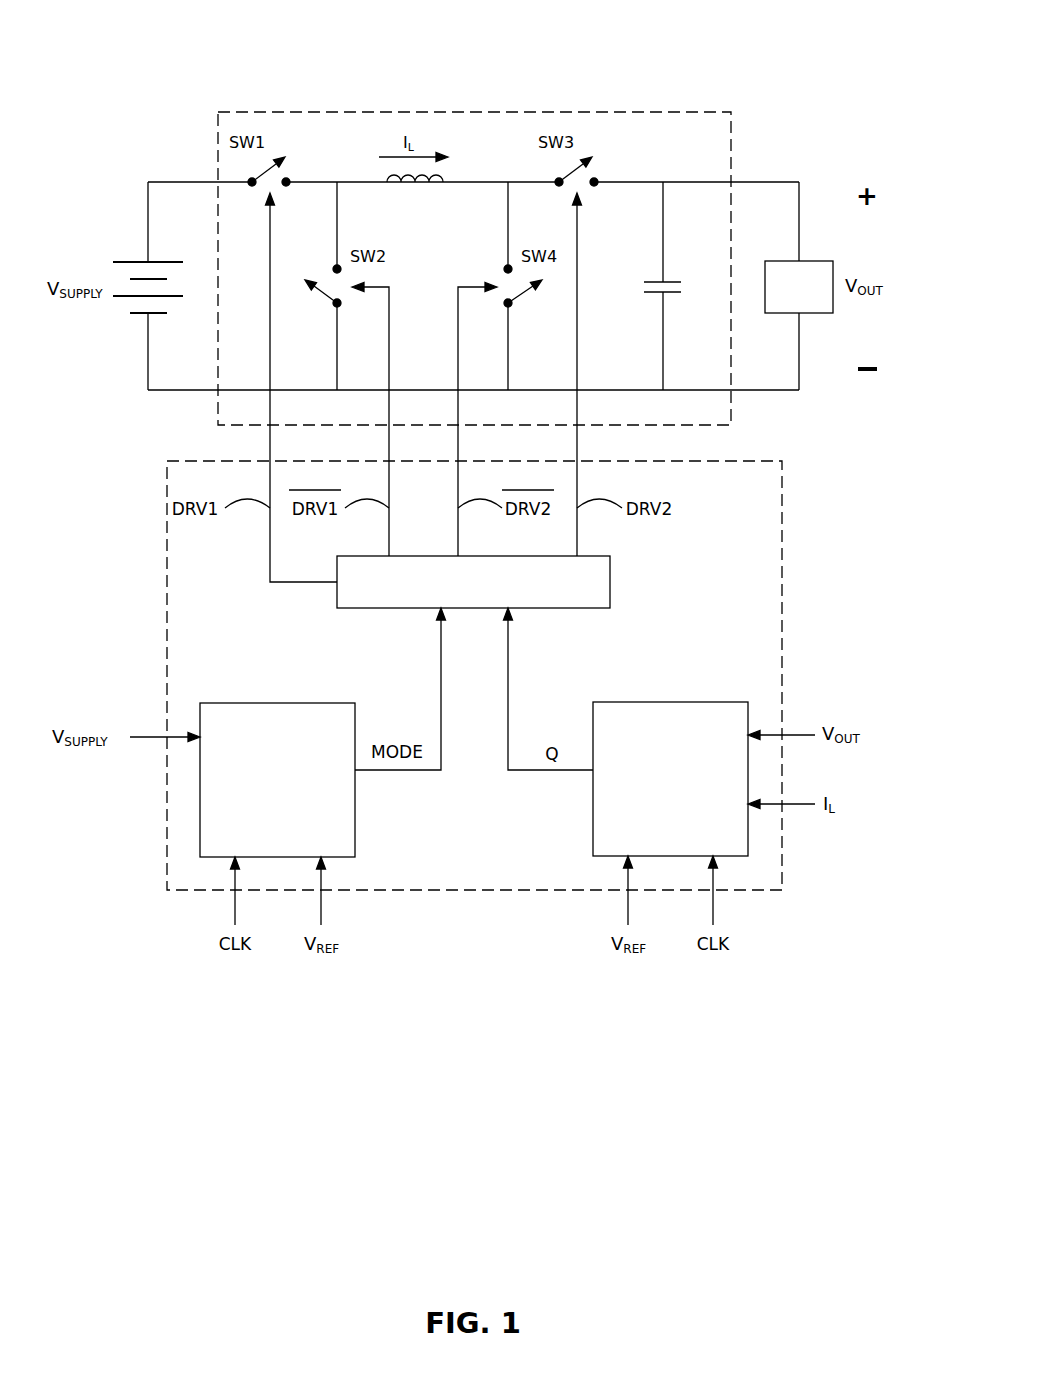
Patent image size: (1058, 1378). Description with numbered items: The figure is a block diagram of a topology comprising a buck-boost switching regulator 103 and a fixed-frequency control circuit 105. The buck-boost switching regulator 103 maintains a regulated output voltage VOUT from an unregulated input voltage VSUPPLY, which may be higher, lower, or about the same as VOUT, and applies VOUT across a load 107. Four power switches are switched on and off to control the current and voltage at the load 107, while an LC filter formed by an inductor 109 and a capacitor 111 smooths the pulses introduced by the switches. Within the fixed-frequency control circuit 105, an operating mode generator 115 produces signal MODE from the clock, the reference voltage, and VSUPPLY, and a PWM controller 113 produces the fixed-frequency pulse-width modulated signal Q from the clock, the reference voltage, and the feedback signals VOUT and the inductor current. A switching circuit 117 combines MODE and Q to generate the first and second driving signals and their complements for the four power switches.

The buck-boost switching regulator 103 is at (594, 92).
The fixed-frequency control circuit 105 is at (154, 916).
The load 107 is at (765, 260).
The inductor 109 is at (432, 188).
The capacitor 111 is at (692, 291).
The PWM controller 113 is at (667, 702).
The operating mode generator 115 is at (277, 703).
The switching circuit 117 is at (593, 609).